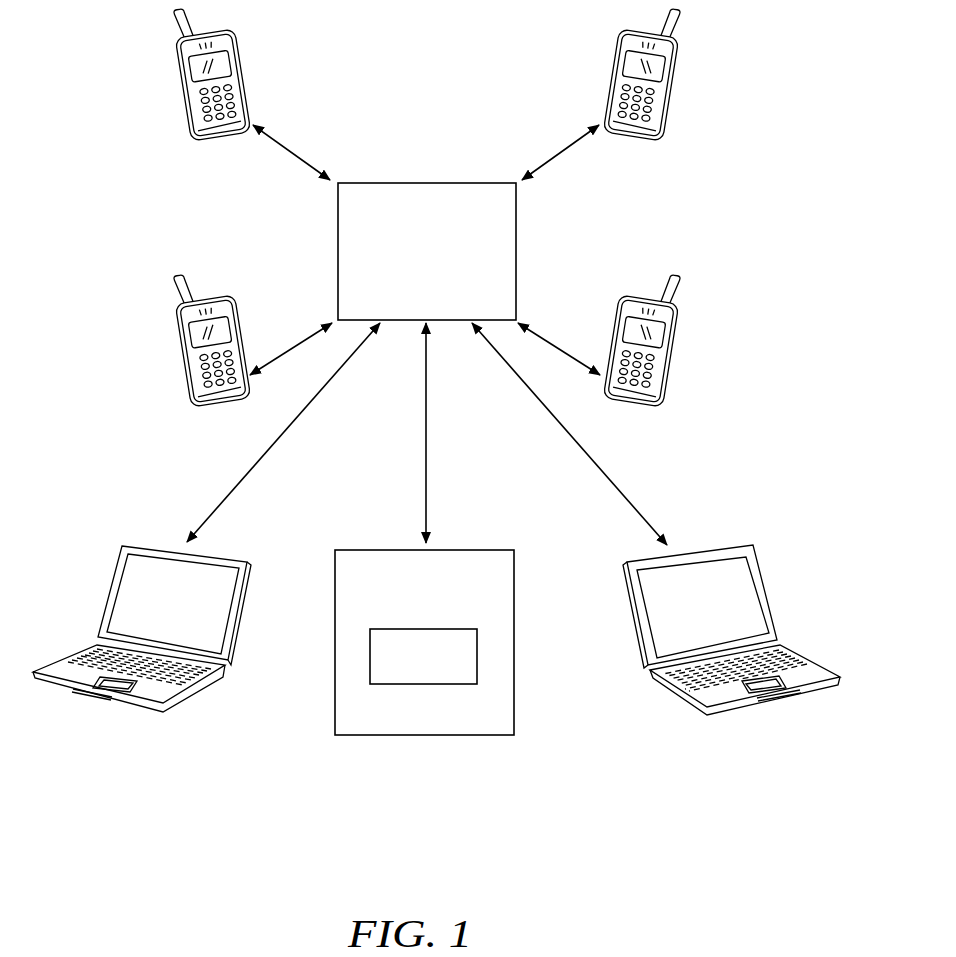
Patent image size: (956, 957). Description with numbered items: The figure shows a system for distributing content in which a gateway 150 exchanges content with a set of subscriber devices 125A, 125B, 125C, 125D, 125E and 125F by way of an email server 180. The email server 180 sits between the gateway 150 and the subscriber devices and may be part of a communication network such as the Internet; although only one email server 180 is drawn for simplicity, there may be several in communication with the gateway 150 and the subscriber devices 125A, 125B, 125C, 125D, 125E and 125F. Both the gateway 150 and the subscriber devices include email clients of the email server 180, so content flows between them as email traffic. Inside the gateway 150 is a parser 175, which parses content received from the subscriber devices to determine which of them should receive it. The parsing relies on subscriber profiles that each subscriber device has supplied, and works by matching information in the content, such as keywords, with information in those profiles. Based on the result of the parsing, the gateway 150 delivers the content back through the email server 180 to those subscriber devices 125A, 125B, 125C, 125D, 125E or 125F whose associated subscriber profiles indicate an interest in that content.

The subscriber device 125A is at (187, 90).
The subscriber device 125B is at (183, 355).
The subscriber device 125C is at (672, 88).
The subscriber device 125D is at (671, 355).
The subscriber device 125E is at (120, 703).
The subscriber device 125F is at (757, 710).
The email server 180 is at (427, 183).
The gateway 150 is at (390, 737).
The parser 175 is at (447, 684).